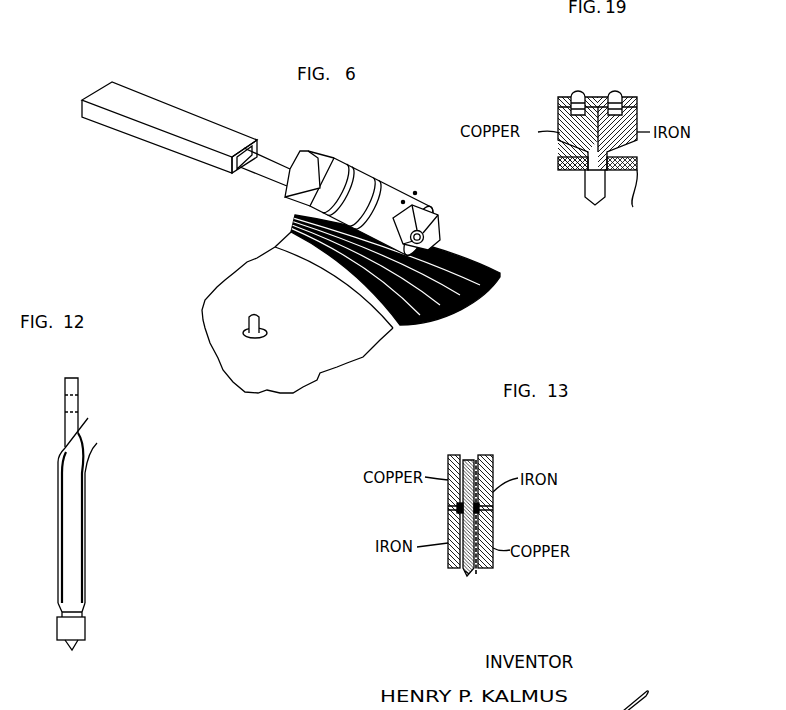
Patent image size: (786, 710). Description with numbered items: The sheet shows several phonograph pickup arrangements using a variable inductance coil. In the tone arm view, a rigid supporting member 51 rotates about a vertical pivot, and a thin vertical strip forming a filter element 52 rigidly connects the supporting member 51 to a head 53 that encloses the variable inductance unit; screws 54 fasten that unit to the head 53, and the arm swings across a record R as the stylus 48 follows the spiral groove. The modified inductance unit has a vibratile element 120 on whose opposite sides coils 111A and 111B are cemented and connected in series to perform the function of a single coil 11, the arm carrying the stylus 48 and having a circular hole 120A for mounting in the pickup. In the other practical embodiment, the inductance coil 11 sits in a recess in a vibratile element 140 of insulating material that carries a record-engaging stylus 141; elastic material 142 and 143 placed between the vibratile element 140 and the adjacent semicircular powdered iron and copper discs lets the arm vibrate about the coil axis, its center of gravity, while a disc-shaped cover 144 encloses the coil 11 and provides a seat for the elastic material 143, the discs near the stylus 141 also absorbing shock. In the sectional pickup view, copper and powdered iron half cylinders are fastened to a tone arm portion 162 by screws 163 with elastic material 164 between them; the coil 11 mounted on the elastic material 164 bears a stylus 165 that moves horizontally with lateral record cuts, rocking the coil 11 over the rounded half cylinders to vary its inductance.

In FIG. 6, the rigid supporting member 51 is at (203, 130).
In FIG. 6, the filter element 52 is at (260, 167).
In FIG. 6, the head 53 is at (362, 161).
In FIG. 6, the screws 54 is at (422, 186).
In FIG. 6, the record R is at (471, 295).
In FIG. 12, the vibratile element 120 is at (72, 428).
In FIG. 12, the circular hole 120A is at (77, 403).
In FIG. 12, the coil 111A is at (60, 560).
In FIG. 12, the coil 111B is at (83, 518).
In FIG. 12, the stylus 48 is at (72, 648).
In FIG. 13, the vibratile element 140 is at (468, 460).
In FIG. 13, the disc-shaped cover 144 is at (478, 456).
In FIG. 13, the elastic material 142 is at (457, 504).
In FIG. 13, the elastic material 143 is at (479, 503).
In FIG. 13, the stylus 141 is at (465, 570).
In FIG. 13, the inductance coil 11 is at (481, 526).
In FIG. 19, the inductance coil 11 is at (639, 198).
In FIG. 19, the tone arm portion 162 is at (598, 98).
In FIG. 19, the screws 163 is at (578, 93).
In FIG. 19, the elastic material 164 is at (607, 153).
In FIG. 19, the stylus 165 is at (593, 200).